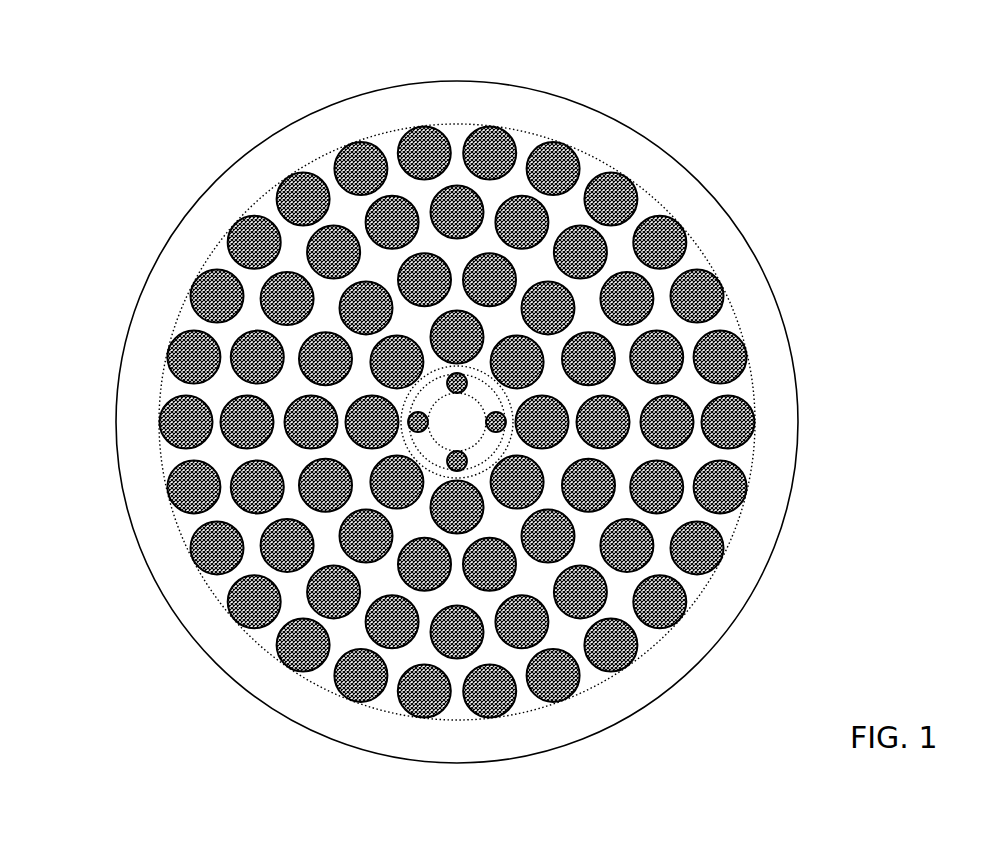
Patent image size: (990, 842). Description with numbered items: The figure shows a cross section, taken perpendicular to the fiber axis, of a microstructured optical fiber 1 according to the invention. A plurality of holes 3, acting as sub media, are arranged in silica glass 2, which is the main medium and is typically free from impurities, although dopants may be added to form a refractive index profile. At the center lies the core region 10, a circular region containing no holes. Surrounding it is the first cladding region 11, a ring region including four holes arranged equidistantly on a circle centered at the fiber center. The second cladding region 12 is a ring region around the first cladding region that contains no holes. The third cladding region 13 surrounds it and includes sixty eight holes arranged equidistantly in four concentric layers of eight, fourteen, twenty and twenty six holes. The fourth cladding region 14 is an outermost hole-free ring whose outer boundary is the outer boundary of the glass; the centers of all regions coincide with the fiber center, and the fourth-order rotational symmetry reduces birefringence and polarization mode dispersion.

The outer jacket 1 is at (237, 158).
The silica glass 2 is at (215, 215).
The holes 3 is at (270, 290).
The core region 10 is at (463, 415).
The first cladding region 11 is at (485, 393).
The second cladding region 12 is at (508, 392).
The third cladding region 13 is at (637, 395).
The fourth cladding region 14 is at (770, 422).